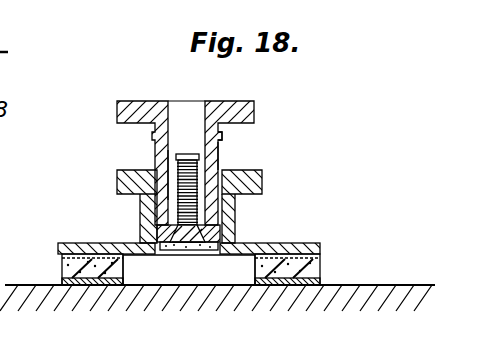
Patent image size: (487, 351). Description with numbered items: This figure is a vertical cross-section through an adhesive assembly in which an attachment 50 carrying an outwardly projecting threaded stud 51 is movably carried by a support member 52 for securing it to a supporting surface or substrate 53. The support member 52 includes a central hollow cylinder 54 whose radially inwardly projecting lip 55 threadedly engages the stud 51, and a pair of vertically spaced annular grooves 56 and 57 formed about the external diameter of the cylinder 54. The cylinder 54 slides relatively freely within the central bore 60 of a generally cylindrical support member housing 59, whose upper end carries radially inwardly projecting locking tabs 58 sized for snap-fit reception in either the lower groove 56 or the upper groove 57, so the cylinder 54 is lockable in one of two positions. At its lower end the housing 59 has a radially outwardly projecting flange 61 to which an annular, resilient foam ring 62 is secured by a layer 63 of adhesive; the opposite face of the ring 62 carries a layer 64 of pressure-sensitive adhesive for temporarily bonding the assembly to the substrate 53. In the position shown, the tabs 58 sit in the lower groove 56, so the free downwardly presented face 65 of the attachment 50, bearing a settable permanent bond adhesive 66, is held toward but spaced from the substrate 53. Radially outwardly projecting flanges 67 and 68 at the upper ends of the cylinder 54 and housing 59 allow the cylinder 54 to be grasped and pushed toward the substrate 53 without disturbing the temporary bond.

The attachment 50 is at (232, 240).
The threaded stud 51 is at (190, 154).
The support member 52 is at (100, 197).
The supporting surface or substrate 53 is at (330, 292).
The central hollow cylinder 54 is at (222, 148).
The radially inwardly projecting lip 55 is at (222, 228).
The lower annular groove 56 is at (217, 171).
The upper annular groove 57 is at (222, 129).
The locking tabs 58 is at (165, 172).
The support member housing 59 is at (147, 216).
The central bore 60 is at (164, 258).
The radially outwardly projecting flange 61 is at (74, 243).
The annular resilient ring 62 is at (60, 270).
The layer of adhesive 63 is at (295, 252).
The layer of temporary adhesive material 64 is at (263, 285).
The free face 65 is at (209, 250).
The permanent bond adhesive 66 is at (183, 244).
The cylinder flange 67 is at (247, 116).
The housing flange 68 is at (117, 172).